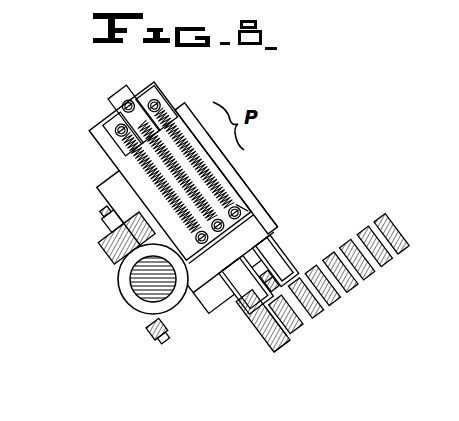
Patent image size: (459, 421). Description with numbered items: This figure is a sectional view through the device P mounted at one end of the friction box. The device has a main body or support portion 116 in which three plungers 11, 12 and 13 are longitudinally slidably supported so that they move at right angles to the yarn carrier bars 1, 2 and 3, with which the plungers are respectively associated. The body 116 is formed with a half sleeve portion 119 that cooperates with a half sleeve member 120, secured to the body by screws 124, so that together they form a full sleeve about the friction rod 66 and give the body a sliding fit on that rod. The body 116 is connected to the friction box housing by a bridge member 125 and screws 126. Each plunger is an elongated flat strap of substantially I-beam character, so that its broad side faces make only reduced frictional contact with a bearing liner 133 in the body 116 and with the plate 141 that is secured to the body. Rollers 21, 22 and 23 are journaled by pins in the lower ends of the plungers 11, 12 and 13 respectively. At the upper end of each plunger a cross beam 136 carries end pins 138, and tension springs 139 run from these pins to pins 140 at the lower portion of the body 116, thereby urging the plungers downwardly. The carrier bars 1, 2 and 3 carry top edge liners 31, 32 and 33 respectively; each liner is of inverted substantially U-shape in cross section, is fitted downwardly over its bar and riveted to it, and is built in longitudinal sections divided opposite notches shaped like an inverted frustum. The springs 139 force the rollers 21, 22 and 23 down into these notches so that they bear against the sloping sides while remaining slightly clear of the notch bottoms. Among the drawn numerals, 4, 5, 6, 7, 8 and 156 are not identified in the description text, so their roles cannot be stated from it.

The yarn carrier bar 1 is at (282, 333).
The yarn carrier bar 2 is at (296, 330).
The yarn carrier bar 3 is at (315, 316).
The contact bar 4 is at (333, 303).
The contact bar 5 is at (352, 288).
The contact bar 6 is at (368, 274).
The contact bar 7 is at (386, 262).
The contact bar 8 is at (399, 231).
The plunger 11 is at (113, 115).
The plunger 12 is at (118, 92).
The plunger 13 is at (155, 84).
The roller 21 is at (234, 301).
The roller 22 is at (273, 243).
The roller 23 is at (284, 252).
The top edge liner 31 is at (261, 325).
The top edge liner 32 is at (290, 345).
The top edge liner 33 is at (292, 265).
The friction rod 66 is at (132, 285).
The main body 116 is at (97, 187).
The half sleeve portion 119 is at (201, 306).
The half sleeve member 120 is at (143, 304).
The screw 124 is at (153, 336).
The bridge member 125 is at (98, 250).
The screw 126 is at (106, 216).
The bearing liner 133 is at (122, 152).
The cross beam 136 is at (149, 110).
The end pin 138 is at (108, 124).
The tension spring 139 is at (189, 104).
The pin 140 is at (243, 207).
The plate 141 is at (230, 169).
The screw 156 is at (118, 133).